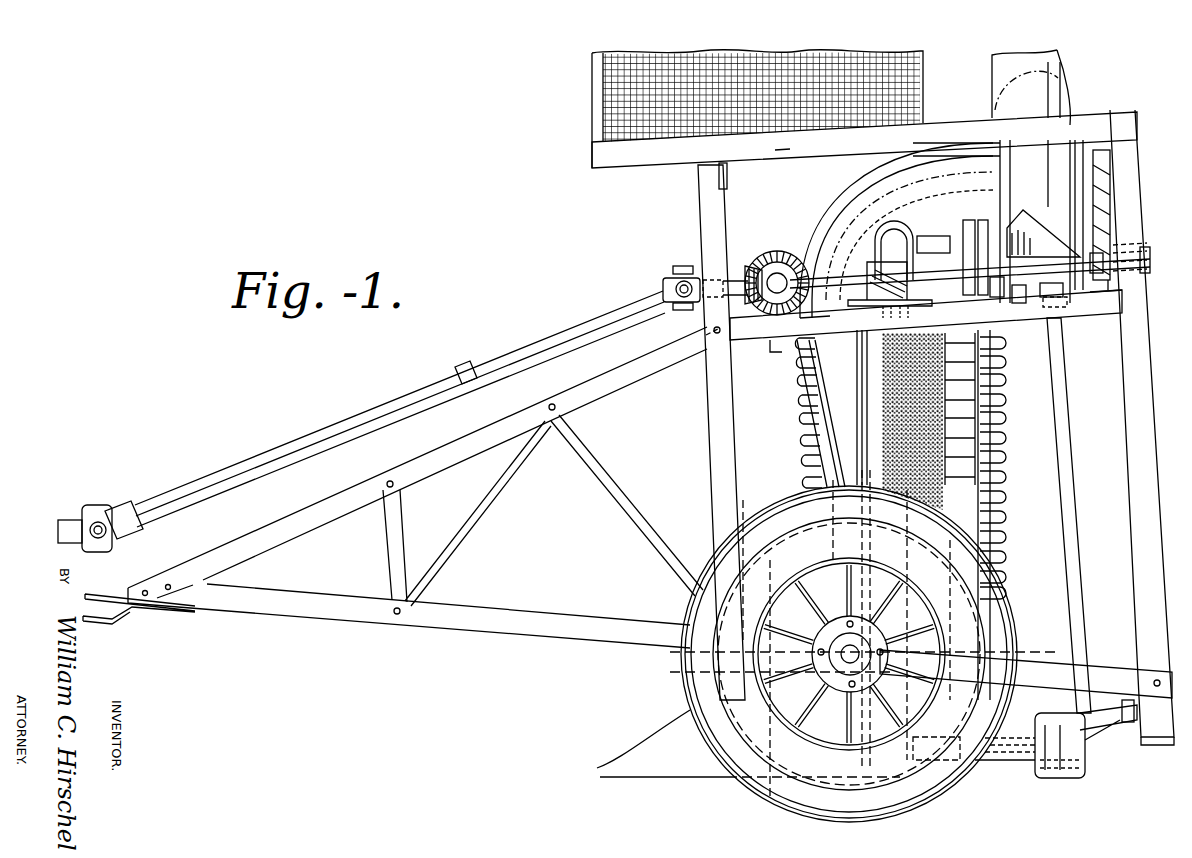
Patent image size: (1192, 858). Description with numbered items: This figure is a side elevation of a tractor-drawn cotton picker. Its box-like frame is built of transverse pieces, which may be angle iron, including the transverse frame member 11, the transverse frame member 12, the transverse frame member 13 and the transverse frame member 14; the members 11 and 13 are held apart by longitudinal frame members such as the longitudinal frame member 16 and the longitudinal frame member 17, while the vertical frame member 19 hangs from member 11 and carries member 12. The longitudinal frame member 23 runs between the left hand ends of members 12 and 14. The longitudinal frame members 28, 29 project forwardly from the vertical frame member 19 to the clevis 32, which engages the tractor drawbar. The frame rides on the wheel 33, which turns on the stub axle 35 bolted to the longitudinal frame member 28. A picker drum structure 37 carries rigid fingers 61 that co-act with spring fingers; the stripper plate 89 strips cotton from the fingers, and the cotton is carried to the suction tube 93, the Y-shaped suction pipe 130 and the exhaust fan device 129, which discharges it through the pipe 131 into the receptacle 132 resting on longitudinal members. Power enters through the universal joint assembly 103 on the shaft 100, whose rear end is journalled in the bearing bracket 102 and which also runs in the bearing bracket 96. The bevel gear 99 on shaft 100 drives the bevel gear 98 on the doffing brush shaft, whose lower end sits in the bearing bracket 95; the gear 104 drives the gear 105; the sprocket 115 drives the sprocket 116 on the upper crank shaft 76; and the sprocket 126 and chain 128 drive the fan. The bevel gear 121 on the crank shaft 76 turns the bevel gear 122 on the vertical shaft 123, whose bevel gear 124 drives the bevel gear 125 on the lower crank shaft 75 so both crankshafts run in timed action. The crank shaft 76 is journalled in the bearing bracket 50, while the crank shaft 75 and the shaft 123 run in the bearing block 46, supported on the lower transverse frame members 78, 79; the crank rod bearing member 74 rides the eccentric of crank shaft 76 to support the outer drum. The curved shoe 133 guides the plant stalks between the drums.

The receptacle 132 is at (603, 123).
The longitudinal frame member 16 is at (660, 158).
The longitudinal frame member 17 is at (783, 152).
The transverse frame member 11 is at (727, 176).
The vertical frame member 19 is at (712, 457).
The transverse frame member 13 is at (1130, 151).
The lower transverse frame member 78 is at (1148, 740).
The transverse frame member 12 is at (738, 329).
The shaft 100 is at (806, 318).
The transverse frame member 14 is at (1108, 316).
The longitudinal frame member 23 is at (786, 343).
The sprocket 126 is at (1063, 297).
The vertical shaft 123 is at (1067, 425).
The longitudinal frame member 29 is at (446, 446).
The longitudinal frame member 28 is at (478, 640).
The clevis 32 is at (125, 622).
The universal joint assembly 103 is at (505, 358).
The gear 104 is at (752, 266).
The gear 105 is at (772, 252).
The bearing bracket 102 is at (1150, 252).
The bevel gear 99 is at (870, 256).
The bearing bracket 96 is at (866, 272).
The bevel gear 98 is at (910, 306).
The crank rod bearing member 74 is at (880, 226).
The upper crank shaft 76 is at (968, 244).
The bearing bracket 50 is at (930, 238).
The sprocket 115 is at (1088, 148).
The chain 128 is at (1110, 212).
The Y-shaped suction pipe 130 is at (882, 184).
The sprocket 116 is at (967, 230).
The pipe 131 is at (992, 76).
The exhaust fan device 129 is at (1072, 105).
The bevel gear 121 is at (1044, 206).
The bevel gear 122 is at (1060, 222).
The picker drum structure 37 is at (790, 425).
The suction tube 93 is at (800, 450).
The stripper plate 89 is at (978, 381).
The rigid finger 61 is at (1004, 416).
The wheel 33 is at (683, 677).
The stub axle 35 is at (826, 681).
The bearing bracket 95 is at (860, 704).
The lower transverse frame member 79 is at (770, 570).
The curved shoe 133 is at (663, 743).
The bevel gear 124 is at (1082, 782).
The bevel gear 125 is at (1026, 782).
The lower crank shaft 75 is at (1010, 765).
The bearing block 46 is at (985, 772).